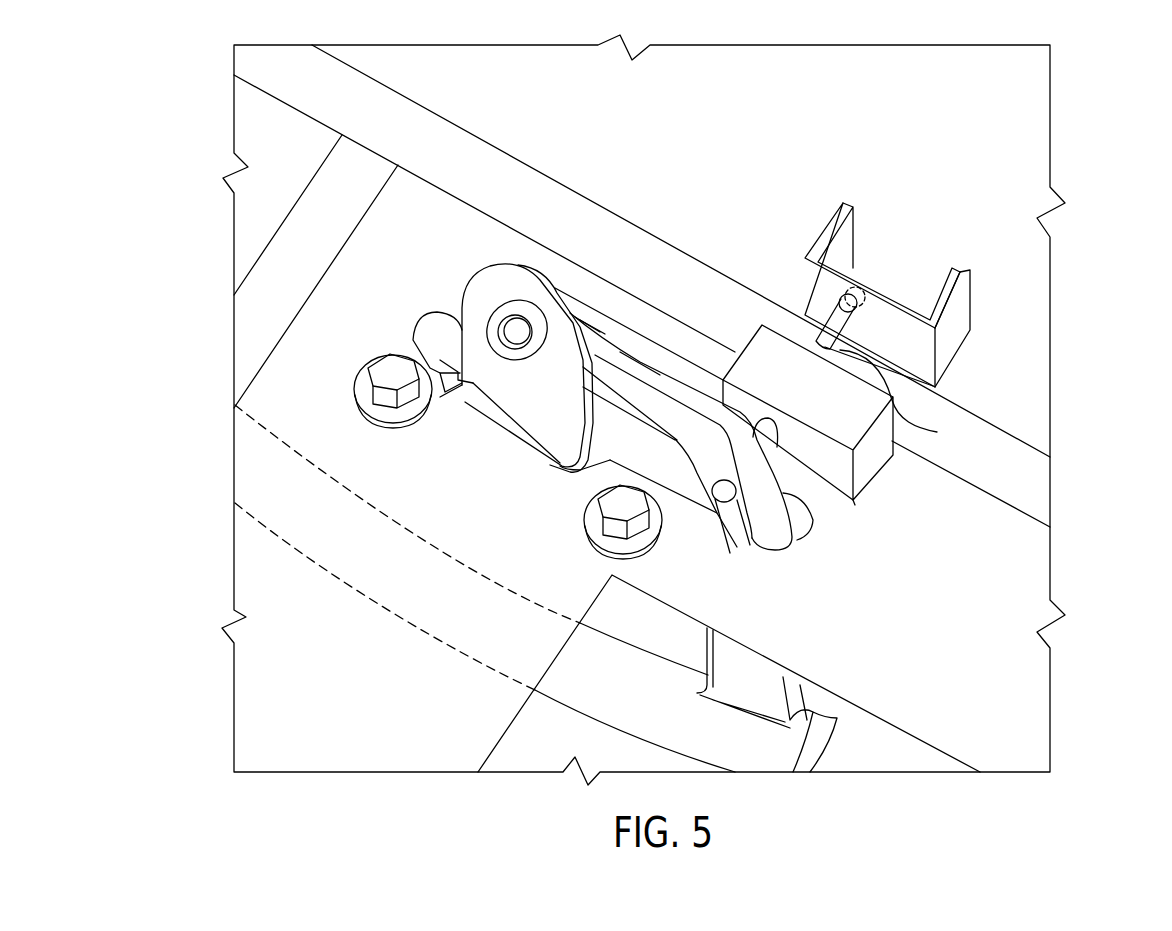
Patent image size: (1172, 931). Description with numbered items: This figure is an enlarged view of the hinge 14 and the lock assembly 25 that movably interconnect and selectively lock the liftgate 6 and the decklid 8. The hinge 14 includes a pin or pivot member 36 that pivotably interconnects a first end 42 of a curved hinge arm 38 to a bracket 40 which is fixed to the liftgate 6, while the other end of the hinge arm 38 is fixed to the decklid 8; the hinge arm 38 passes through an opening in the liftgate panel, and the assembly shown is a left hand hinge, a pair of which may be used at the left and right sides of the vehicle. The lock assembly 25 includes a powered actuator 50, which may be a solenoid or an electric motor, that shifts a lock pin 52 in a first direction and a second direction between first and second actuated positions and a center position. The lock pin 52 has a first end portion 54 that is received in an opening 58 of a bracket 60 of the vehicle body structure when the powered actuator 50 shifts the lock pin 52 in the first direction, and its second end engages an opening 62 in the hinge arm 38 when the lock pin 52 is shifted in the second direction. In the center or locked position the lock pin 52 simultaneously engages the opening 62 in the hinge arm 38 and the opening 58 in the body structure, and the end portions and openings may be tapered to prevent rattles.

The liftgate 6 is at (1032, 603).
The decklid 8 is at (243, 222).
The hinge 14 is at (503, 366).
The lock assembly 25 is at (866, 514).
The pivot member 36 is at (548, 272).
The hinge arm 38 is at (628, 340).
The bracket 40 is at (537, 403).
The first end 42 is at (575, 295).
The powered actuator 50 is at (880, 480).
The lock pin 52 is at (894, 372).
The first end portion 54 is at (866, 302).
The opening 58 is at (893, 337).
The bracket 60 is at (950, 355).
The opening 62 is at (728, 515).